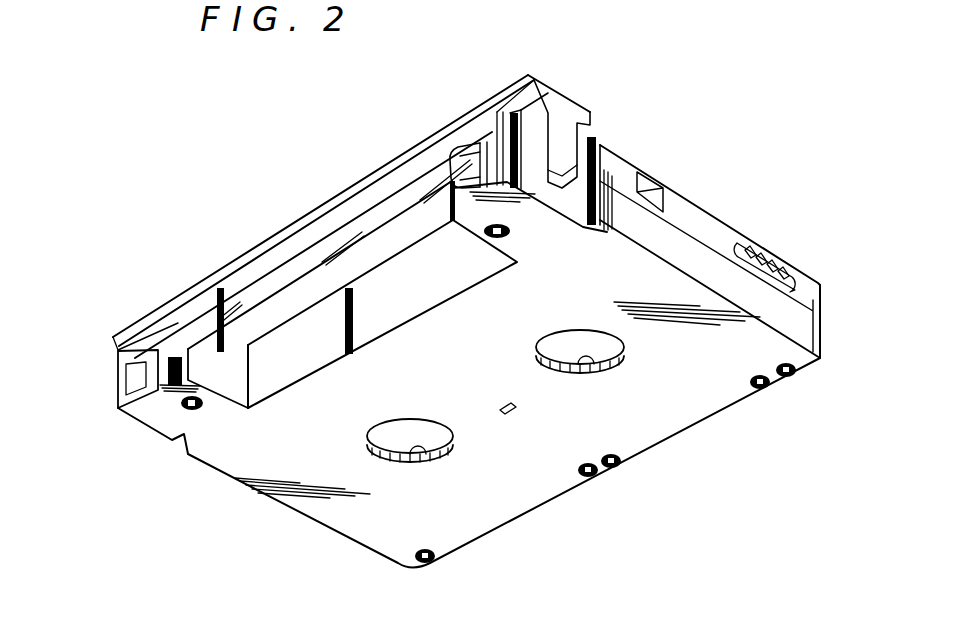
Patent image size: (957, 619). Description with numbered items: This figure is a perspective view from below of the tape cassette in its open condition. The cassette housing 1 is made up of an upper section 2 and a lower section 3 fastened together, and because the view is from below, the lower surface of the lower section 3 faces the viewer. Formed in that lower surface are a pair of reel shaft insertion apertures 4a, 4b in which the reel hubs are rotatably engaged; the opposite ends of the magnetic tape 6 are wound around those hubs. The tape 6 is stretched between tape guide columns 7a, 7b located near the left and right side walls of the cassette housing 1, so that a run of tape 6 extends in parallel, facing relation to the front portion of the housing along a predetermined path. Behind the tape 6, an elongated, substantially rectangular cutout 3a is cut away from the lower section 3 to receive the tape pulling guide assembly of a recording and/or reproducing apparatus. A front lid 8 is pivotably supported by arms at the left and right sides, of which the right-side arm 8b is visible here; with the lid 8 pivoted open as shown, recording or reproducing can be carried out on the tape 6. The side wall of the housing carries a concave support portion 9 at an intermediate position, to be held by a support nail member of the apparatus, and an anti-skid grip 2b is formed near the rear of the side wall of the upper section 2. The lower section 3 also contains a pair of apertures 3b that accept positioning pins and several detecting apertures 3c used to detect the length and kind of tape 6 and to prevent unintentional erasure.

The cassette housing 1 is at (849, 247).
The upper section 2 is at (812, 292).
The anti-skid grip 2b is at (771, 257).
The lower section 3 is at (818, 337).
The elongated cutout 3a is at (448, 289).
The apertures 3b is at (195, 410).
The detecting apertures 3c is at (432, 562).
The reel shaft insertion aperture 4a is at (416, 457).
The reel shaft insertion aperture 4b is at (597, 367).
The magnetic tape 6 is at (312, 258).
The tape guide column 7a is at (147, 377).
The tape guide column 7b is at (454, 160).
The front lid 8 is at (398, 146).
The arm 8b is at (581, 122).
The concave support portion 9 is at (652, 176).